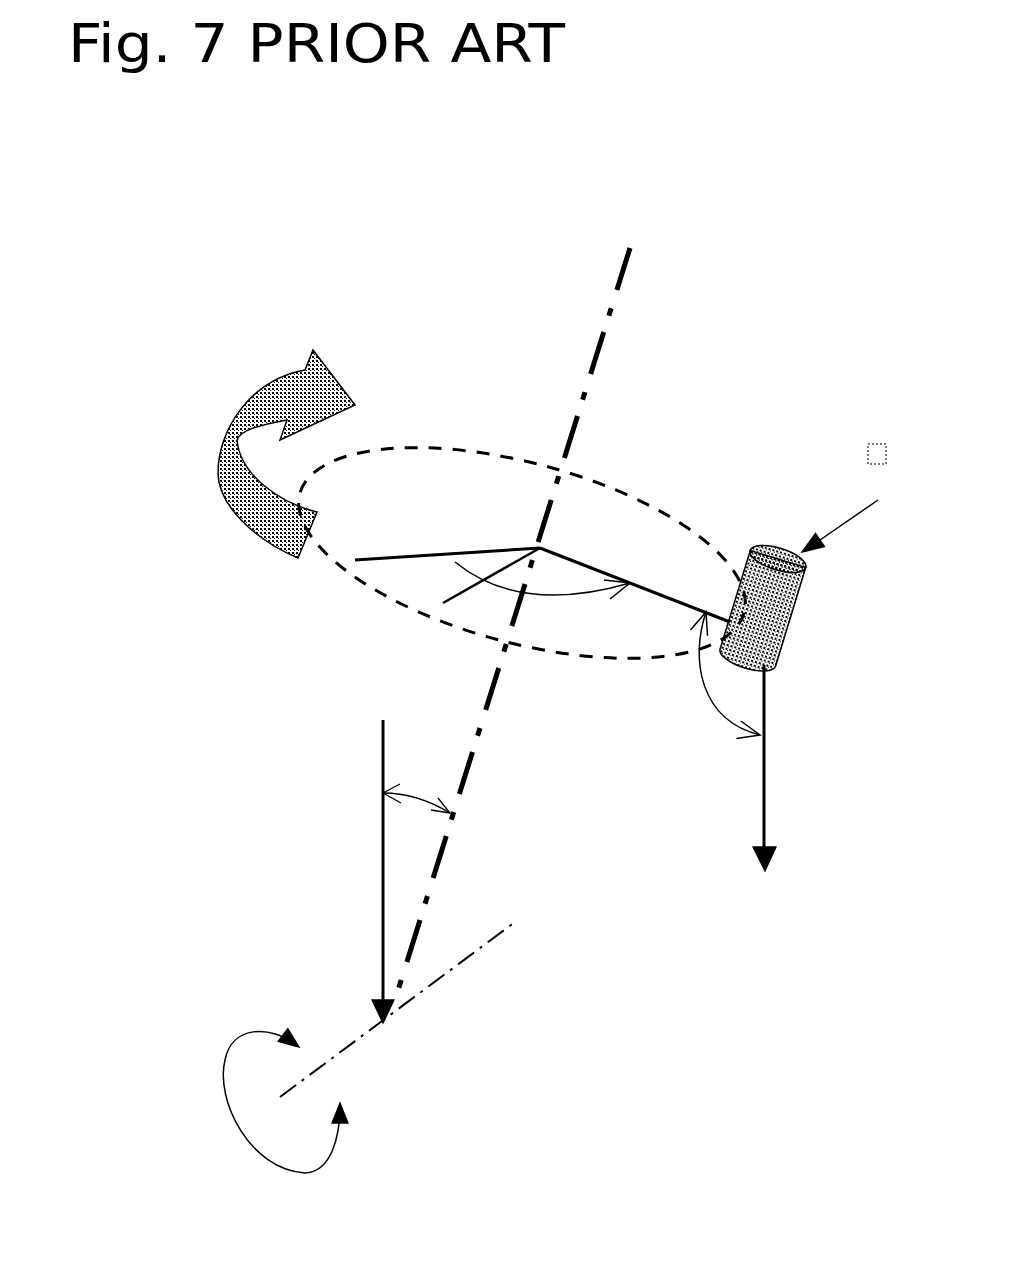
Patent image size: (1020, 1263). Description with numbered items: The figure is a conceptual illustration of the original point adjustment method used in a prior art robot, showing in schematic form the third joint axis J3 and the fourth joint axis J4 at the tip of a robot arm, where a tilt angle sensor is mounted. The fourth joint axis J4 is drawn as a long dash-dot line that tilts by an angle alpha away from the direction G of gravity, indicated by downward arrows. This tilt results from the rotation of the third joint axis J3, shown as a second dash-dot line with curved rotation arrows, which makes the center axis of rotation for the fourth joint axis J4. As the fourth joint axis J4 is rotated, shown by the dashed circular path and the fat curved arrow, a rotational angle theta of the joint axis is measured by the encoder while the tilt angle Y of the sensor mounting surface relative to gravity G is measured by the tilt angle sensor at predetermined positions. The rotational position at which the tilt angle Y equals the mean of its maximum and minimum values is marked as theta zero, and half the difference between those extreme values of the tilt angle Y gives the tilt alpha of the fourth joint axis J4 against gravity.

The fourth joint axis J4 is at (542, 597).
The third joint axis J3 is at (369, 1047).
The direction of gravity G is at (571, 844).
The tilt angle Y is at (724, 683).